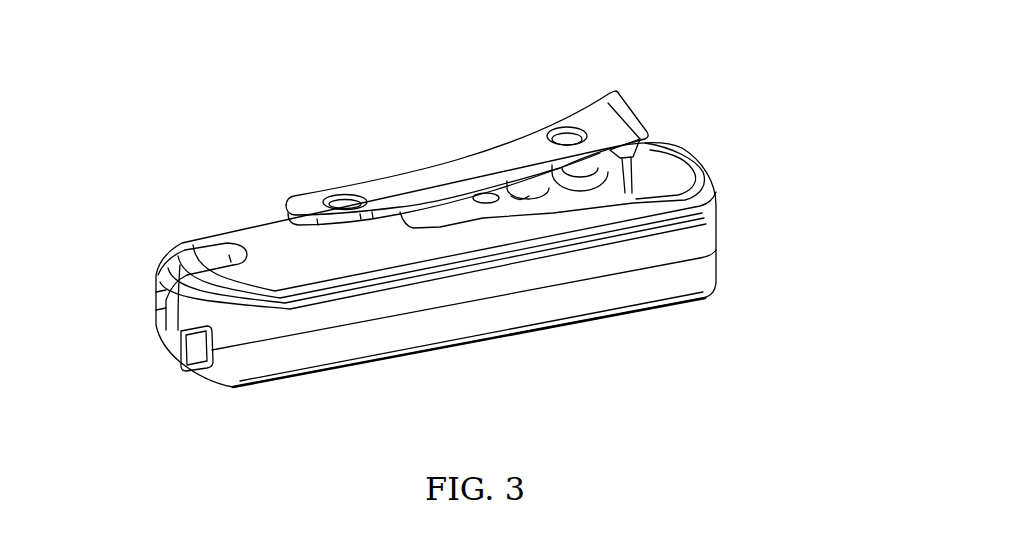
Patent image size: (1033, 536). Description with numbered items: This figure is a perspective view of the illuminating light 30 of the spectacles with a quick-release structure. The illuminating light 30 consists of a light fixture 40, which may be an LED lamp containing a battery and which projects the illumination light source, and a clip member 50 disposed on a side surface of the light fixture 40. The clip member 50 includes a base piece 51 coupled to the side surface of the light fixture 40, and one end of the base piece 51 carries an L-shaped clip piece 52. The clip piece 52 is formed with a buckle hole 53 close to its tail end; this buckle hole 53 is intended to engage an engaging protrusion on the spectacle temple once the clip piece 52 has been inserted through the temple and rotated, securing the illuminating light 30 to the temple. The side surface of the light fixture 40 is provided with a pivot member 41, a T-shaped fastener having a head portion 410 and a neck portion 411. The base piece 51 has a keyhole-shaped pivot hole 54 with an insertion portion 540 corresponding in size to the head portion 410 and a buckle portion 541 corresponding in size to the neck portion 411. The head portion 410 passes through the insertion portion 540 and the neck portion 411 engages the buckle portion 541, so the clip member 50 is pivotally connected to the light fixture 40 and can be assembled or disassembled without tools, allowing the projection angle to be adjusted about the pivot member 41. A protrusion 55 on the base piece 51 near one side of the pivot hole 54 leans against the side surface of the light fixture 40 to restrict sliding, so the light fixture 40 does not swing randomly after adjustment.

The illuminating light 30 is at (222, 224).
The light fixture 40 is at (478, 318).
The pivot member 41 is at (700, 177).
The head portion 410 is at (700, 152).
The neck portion 411 is at (697, 207).
The clip member 50 is at (618, 92).
The base piece 51 is at (574, 192).
The clip piece 52 is at (487, 163).
The buckle hole 53 is at (342, 196).
The pivot hole 54 is at (535, 193).
The insertion portion 540 is at (521, 197).
The buckle portion 541 is at (599, 186).
The protrusion 55 is at (484, 205).